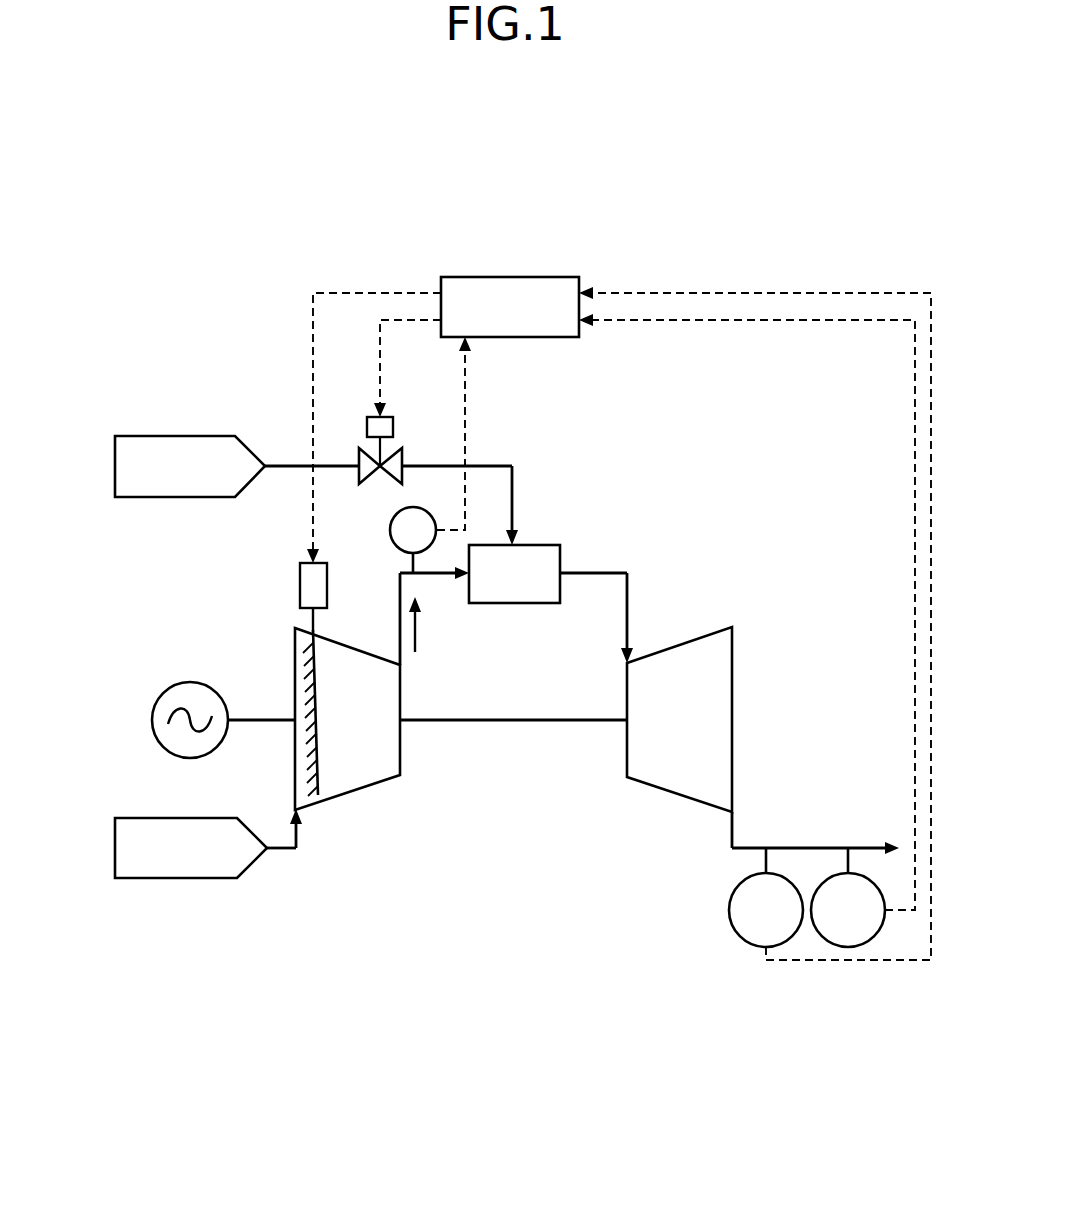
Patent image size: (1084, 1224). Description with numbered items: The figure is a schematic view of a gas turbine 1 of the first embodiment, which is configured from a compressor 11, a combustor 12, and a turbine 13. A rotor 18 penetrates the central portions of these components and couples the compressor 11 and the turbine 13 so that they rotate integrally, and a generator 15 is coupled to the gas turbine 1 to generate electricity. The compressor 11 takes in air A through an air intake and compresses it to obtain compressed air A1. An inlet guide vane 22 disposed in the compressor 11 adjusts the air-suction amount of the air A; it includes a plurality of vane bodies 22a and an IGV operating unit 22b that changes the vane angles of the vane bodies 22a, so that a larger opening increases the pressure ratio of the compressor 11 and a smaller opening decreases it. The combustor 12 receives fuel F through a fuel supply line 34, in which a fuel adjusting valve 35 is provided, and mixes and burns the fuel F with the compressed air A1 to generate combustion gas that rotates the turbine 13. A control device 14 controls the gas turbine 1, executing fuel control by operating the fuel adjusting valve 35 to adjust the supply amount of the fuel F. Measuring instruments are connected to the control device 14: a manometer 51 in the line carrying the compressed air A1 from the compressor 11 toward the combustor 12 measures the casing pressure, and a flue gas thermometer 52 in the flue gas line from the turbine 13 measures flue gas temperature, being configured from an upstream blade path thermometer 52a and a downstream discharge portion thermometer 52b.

The gas turbine 1 is at (576, 160).
The compressor 11 is at (342, 796).
The combustor 12 is at (525, 545).
The turbine 13 is at (682, 796).
The control device 14 is at (527, 277).
The generator 15 is at (192, 682).
The rotor 18 is at (513, 722).
The inlet guide vane 22 is at (311, 674).
The vane bodies 22a is at (325, 701).
The IGV operating unit 22b is at (328, 586).
The fuel supply line 34 is at (288, 466).
The fuel adjusting valve 35 is at (408, 460).
The manometer 51 is at (390, 530).
The flue gas thermometer 52 is at (823, 981).
The blade path thermometer 52a is at (780, 948).
The discharge portion thermometer 52b is at (862, 948).
The air A is at (115, 848).
The compressed air A1 is at (418, 634).
The fuel F is at (115, 466).